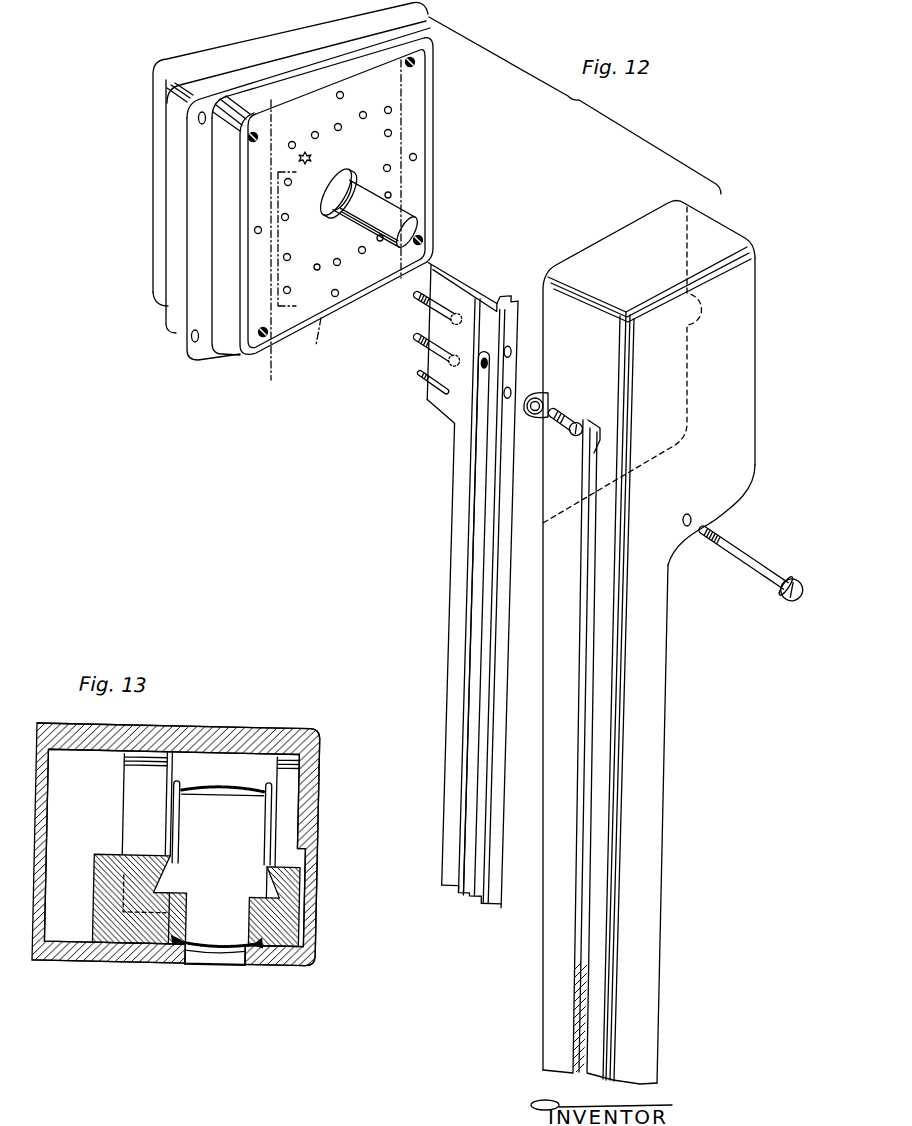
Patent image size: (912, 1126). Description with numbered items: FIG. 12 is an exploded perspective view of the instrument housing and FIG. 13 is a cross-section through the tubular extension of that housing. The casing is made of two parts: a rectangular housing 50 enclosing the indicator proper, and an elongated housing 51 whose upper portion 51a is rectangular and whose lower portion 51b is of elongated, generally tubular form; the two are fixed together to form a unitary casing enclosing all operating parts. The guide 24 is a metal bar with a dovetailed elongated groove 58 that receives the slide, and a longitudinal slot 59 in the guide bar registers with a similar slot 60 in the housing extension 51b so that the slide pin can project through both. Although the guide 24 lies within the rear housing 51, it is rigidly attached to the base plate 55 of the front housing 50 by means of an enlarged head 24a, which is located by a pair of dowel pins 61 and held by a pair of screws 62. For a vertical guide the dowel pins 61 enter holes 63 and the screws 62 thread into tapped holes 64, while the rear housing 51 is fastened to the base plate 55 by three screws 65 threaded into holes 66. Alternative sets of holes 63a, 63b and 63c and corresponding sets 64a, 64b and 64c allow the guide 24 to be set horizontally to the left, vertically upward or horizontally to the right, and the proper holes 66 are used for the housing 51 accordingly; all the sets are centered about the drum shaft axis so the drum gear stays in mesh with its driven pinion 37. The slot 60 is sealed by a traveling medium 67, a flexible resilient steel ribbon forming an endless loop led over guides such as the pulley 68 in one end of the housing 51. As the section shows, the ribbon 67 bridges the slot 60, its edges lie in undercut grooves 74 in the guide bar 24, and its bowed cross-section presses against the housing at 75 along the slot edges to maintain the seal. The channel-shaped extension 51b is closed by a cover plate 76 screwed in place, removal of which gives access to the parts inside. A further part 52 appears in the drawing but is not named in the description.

In FIG. 12, the guide 24 is at (278, 204).
In FIG. 13, the guide 24 is at (97, 888).
In FIG. 12, the enlarged head 24a is at (440, 405).
In FIG. 12, the driven pinion 37 is at (312, 158).
In FIG. 12, the rectangular housing 50 is at (237, 38).
In FIG. 12, the elongated housing 51 is at (676, 690).
In FIG. 12, the upper portion 51a is at (750, 324).
In FIG. 12, the lower portion 51b is at (665, 756).
In FIG. 13, the lower portion 51b is at (308, 891).
In FIG. 12, the flange plate 52 is at (431, 18).
In FIG. 12, the base plate 55 is at (420, 119).
In FIG. 12, the elongated groove 58 is at (491, 296).
In FIG. 13, the elongated groove 58 is at (173, 873).
In FIG. 12, the longitudinal slot 59 is at (480, 485).
In FIG. 12, the slot 60 is at (583, 804).
In FIG. 13, the slot 60 is at (197, 961).
In FIG. 12, the dowel pins 61 is at (431, 266).
In FIG. 12, the screws 62 is at (424, 300).
In FIG. 12, the holes 63 is at (292, 182).
In FIG. 12, the set of holes 63a is at (363, 111).
In FIG. 12, the set of holes 63b is at (386, 113).
In FIG. 12, the set of holes 63c is at (322, 259).
In FIG. 12, the tapped holes 64 is at (289, 254).
In FIG. 12, the set of holes 64a is at (324, 125).
In FIG. 12, the set of holes 64b is at (385, 166).
In FIG. 12, the set of holes 64c is at (356, 265).
In FIG. 12, the screws 65 is at (563, 413).
In FIG. 12, the holes 66 is at (341, 91).
In FIG. 13, the traveling medium 67 is at (230, 786).
In FIG. 13, the pulley 68 is at (190, 822).
In FIG. 12, the undercut grooves 74 is at (460, 818).
In FIG. 13, the undercut grooves 74 is at (184, 937).
In FIG. 13, the sealing engagement 75 is at (207, 953).
In FIG. 13, the cover plate 76 is at (47, 799).